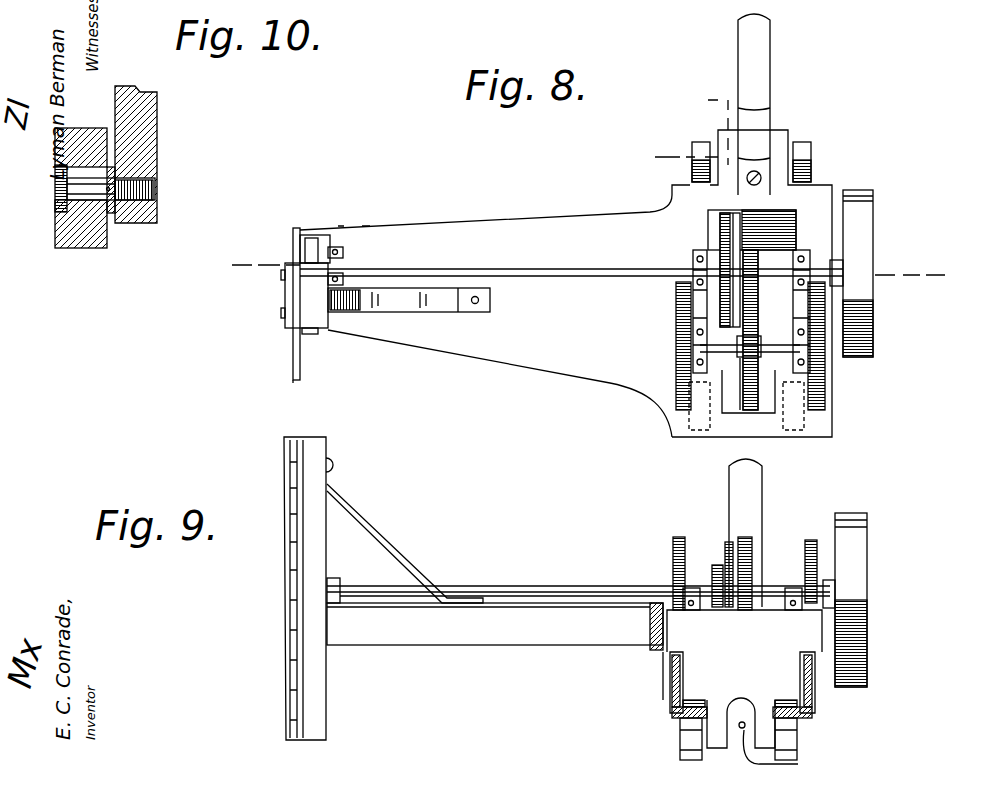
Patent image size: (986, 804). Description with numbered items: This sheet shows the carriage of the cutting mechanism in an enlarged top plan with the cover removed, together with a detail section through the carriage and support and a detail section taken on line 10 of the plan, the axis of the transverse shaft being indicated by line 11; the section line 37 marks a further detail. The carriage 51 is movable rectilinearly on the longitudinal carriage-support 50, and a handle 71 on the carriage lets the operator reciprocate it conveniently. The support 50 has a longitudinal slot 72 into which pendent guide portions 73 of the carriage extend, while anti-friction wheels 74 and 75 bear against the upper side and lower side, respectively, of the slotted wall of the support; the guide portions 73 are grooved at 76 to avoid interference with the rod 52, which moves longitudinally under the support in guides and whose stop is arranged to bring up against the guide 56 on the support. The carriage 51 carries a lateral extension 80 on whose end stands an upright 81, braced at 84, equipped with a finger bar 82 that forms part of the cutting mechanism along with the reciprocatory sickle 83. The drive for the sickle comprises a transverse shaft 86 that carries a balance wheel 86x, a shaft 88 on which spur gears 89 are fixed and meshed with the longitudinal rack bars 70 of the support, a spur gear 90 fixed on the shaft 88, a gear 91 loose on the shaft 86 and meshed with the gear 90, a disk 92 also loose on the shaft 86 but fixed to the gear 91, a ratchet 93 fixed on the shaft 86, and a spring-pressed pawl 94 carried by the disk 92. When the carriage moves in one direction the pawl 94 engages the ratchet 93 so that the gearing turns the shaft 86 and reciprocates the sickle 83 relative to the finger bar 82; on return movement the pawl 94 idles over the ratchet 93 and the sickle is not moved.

In FIG. 8, the axis line 10 is at (683, 129).
In FIG. 8, the axis line 11 is at (590, 268).
In FIG. 10, the screw 37 is at (56, 205).
In FIG. 9, the carriage-support 50 is at (668, 713).
In FIG. 8, the carriage 51 is at (765, 432).
In FIG. 9, the carriage 51 is at (788, 630).
In FIG. 9, the rod 52 is at (722, 762).
In FIG. 9, the guide 56 is at (742, 704).
In FIG. 9, the rack bars 70 is at (682, 660).
In FIG. 8, the handle 71 is at (758, 82).
In FIG. 9, the handle 71 is at (764, 512).
In FIG. 9, the longitudinal slot 72 is at (712, 743).
In FIG. 10, the pendent guide portions 73 is at (148, 160).
In FIG. 9, the pendent guide portions 73 is at (744, 634).
In FIG. 8, the anti-friction wheels 74 is at (700, 146).
In FIG. 9, the anti-friction wheels 74 is at (814, 714).
In FIG. 10, the anti-friction wheels 75 is at (83, 238).
In FIG. 9, the anti-friction wheels 75 is at (680, 742).
In FIG. 9, the groove 76 is at (785, 748).
In FIG. 8, the lateral extension 80 is at (566, 283).
In FIG. 9, the lateral extension 80 is at (540, 645).
In FIG. 8, the upright 81 is at (306, 295).
In FIG. 8, the finger bar 82 is at (301, 368).
In FIG. 9, the finger bar 82 is at (300, 553).
In FIG. 8, the sickle 83 is at (291, 352).
In FIG. 9, the sickle 83 is at (288, 568).
In FIG. 8, the brace 84 is at (412, 315).
In FIG. 9, the brace 84 is at (392, 546).
In FIG. 8, the transverse shaft 86 is at (546, 278).
In FIG. 9, the transverse shaft 86 is at (541, 590).
In FIG. 8, the balance wheel 86x is at (858, 290).
In FIG. 8, the shaft 88 is at (775, 350).
In FIG. 9, the shaft 88 is at (679, 573).
In FIG. 8, the spur gears 89 is at (818, 373).
In FIG. 9, the spur gears 89 is at (808, 550).
In FIG. 8, the spur gear 90 is at (746, 412).
In FIG. 9, the spur gear 90 is at (745, 540).
In FIG. 8, the gear 91 is at (760, 248).
In FIG. 8, the disk 92 is at (745, 242).
In FIG. 9, the disk 92 is at (727, 546).
In FIG. 8, the ratchet 93 is at (718, 303).
In FIG. 9, the ratchet 93 is at (715, 572).
In FIG. 8, the spring-pressed pawl 94 is at (720, 226).